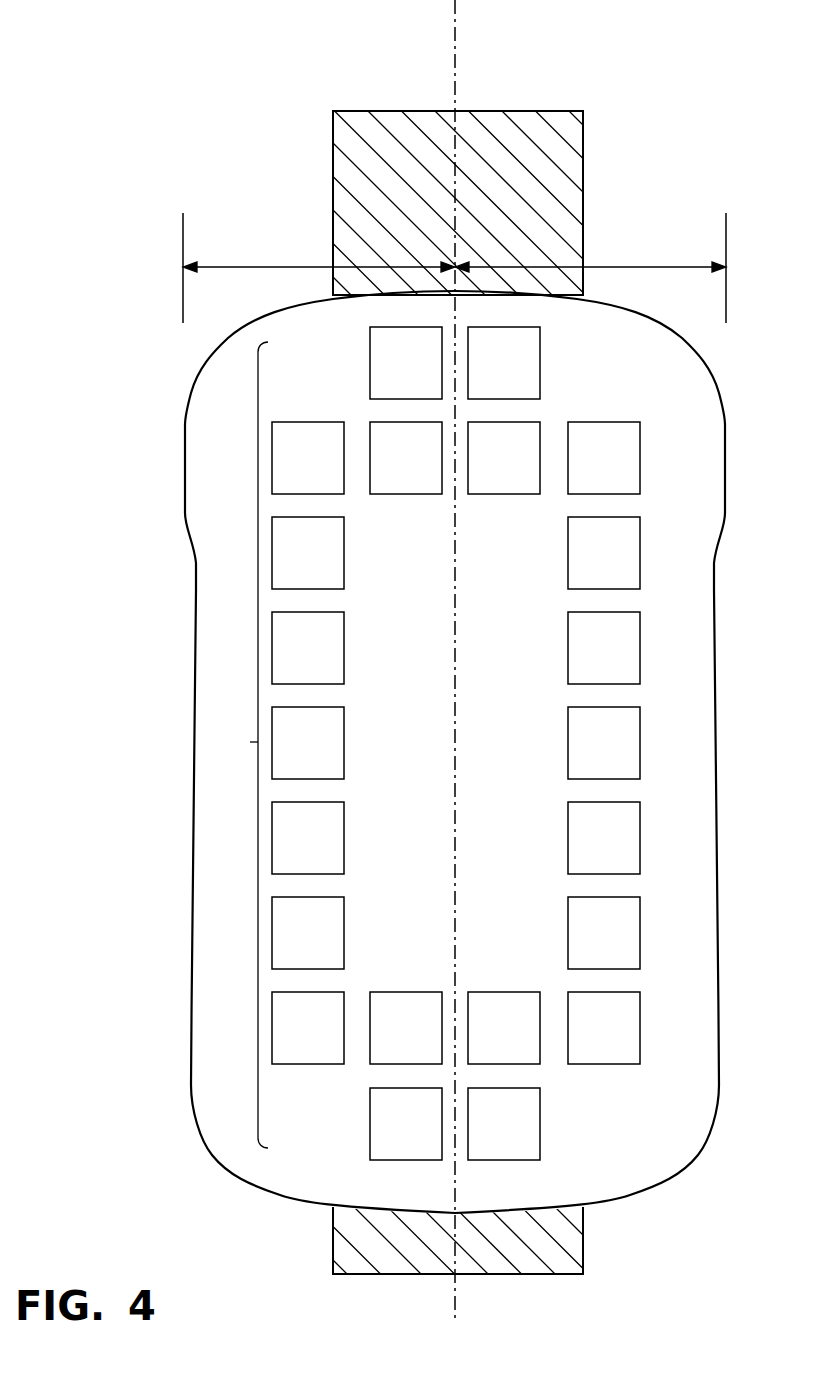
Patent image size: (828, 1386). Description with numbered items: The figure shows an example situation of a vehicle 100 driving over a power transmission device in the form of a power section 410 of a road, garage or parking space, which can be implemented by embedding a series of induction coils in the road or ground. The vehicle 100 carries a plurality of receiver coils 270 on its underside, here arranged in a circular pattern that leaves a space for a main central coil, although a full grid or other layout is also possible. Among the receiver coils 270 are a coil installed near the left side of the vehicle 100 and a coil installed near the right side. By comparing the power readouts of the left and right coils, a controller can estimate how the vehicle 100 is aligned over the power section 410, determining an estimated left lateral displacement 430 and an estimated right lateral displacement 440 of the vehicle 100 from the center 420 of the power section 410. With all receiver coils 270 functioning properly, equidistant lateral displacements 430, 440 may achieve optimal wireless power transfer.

The vehicle 100 is at (186, 487).
The receiver coils 270 is at (250, 742).
The power section 410 is at (333, 128).
The center 420 is at (455, 56).
The left lateral displacement 430 is at (232, 267).
The right lateral displacement 440 is at (619, 267).